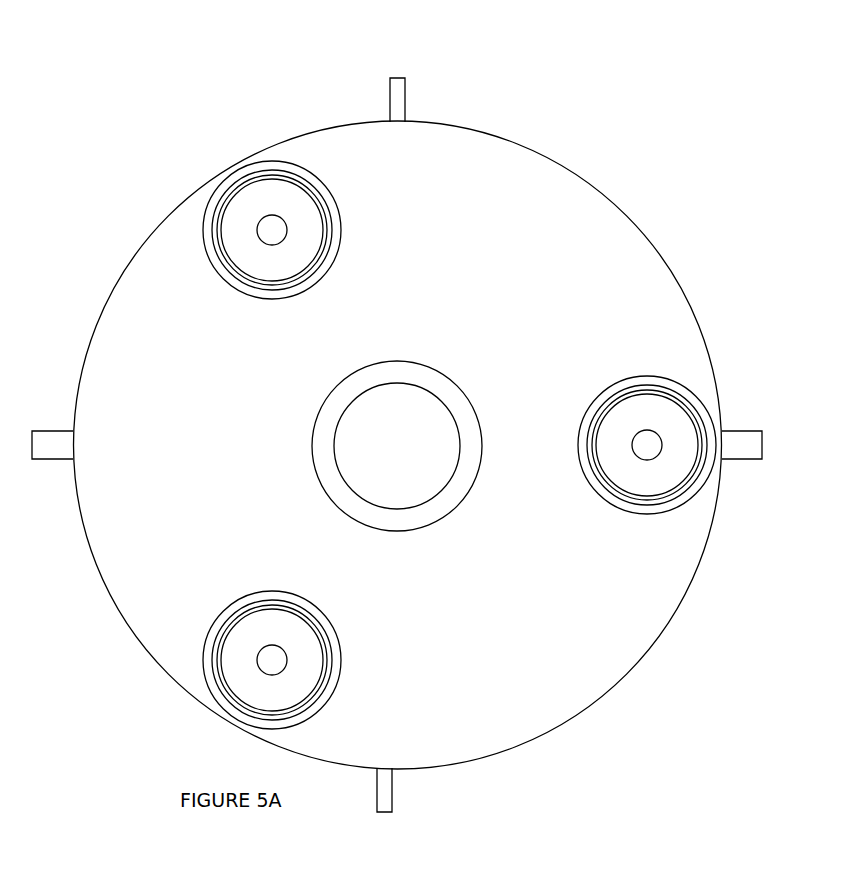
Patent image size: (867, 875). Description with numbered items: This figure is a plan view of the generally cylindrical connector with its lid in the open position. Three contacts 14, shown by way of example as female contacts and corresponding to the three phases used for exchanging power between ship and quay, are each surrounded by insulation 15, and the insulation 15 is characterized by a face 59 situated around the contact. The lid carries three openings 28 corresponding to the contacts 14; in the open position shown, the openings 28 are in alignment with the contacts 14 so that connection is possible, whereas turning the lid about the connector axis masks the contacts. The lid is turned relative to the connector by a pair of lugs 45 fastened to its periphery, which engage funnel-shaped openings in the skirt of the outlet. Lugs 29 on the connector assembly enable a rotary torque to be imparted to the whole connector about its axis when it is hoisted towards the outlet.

The contacts 14 is at (262, 218).
The insulation 15 is at (672, 467).
The openings 28 is at (203, 233).
The lugs 29 is at (752, 431).
The lugs 45 is at (405, 102).
The face 59 is at (652, 503).